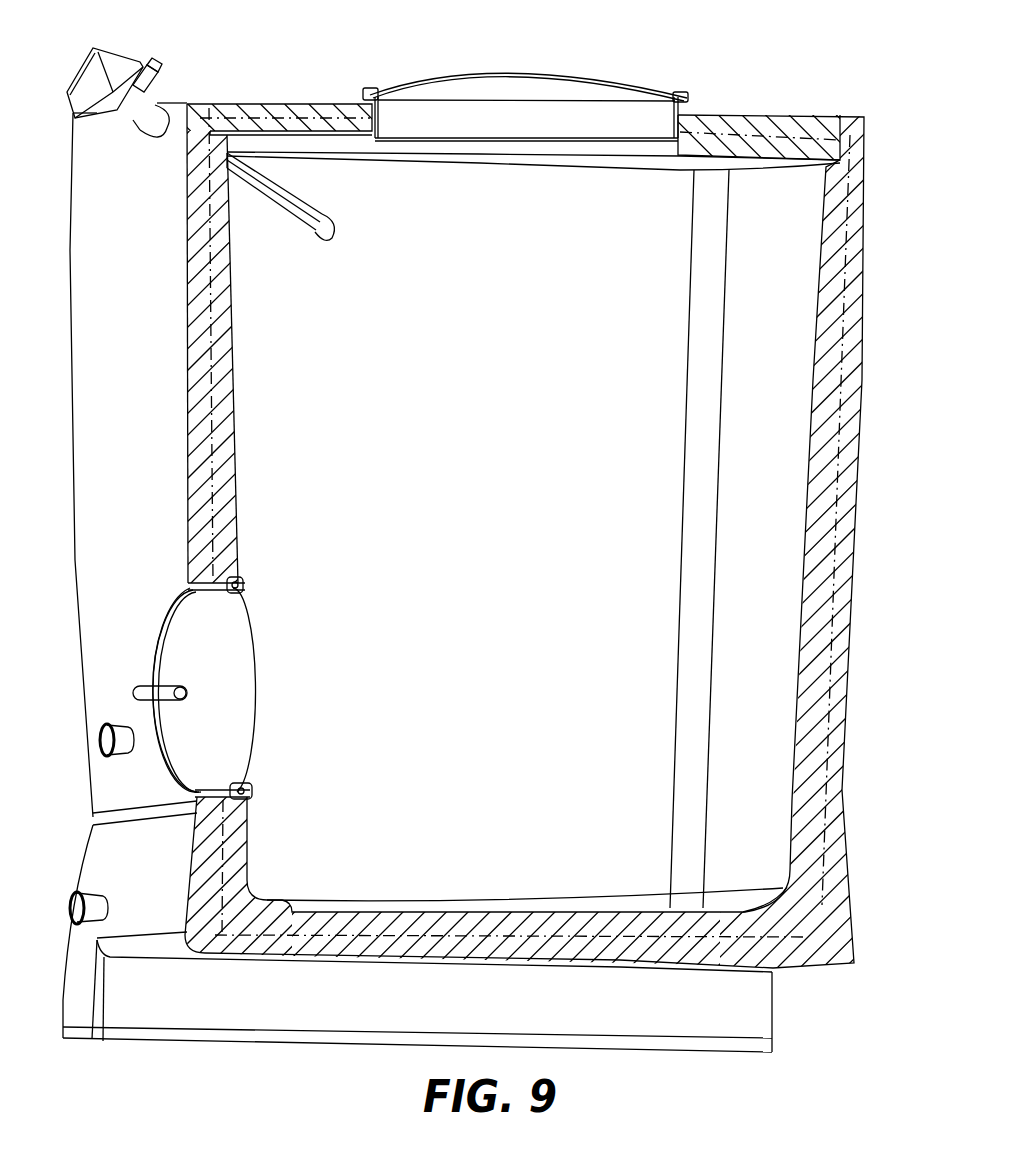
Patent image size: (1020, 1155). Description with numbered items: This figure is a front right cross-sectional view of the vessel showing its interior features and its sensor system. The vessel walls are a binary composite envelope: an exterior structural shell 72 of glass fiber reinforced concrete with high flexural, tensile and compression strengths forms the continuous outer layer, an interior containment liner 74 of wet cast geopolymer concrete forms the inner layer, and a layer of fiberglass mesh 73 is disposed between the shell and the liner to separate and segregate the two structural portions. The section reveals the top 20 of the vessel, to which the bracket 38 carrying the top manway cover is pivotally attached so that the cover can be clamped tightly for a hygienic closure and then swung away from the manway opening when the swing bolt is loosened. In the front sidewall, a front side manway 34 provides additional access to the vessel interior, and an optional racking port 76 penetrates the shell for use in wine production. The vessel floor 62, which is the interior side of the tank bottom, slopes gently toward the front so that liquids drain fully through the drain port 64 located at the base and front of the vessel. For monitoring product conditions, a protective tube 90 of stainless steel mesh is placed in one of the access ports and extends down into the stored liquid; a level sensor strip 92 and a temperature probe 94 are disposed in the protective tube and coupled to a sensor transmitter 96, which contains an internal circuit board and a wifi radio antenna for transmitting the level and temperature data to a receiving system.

The top 20 is at (797, 115).
The front side manway 34 is at (170, 658).
The bracket 38 is at (552, 73).
The vessel floor 62 is at (743, 910).
The drain port 64 is at (72, 905).
The exterior structural shell 72 is at (848, 345).
The fiberglass mesh 73 is at (735, 137).
The interior containment liner 74 is at (830, 280).
The racking port 76 is at (100, 735).
The protective tube 90 is at (270, 177).
The level sensor strip 92 is at (320, 220).
The temperature probe 94 is at (227, 163).
The sensor transmitter 96 is at (100, 48).